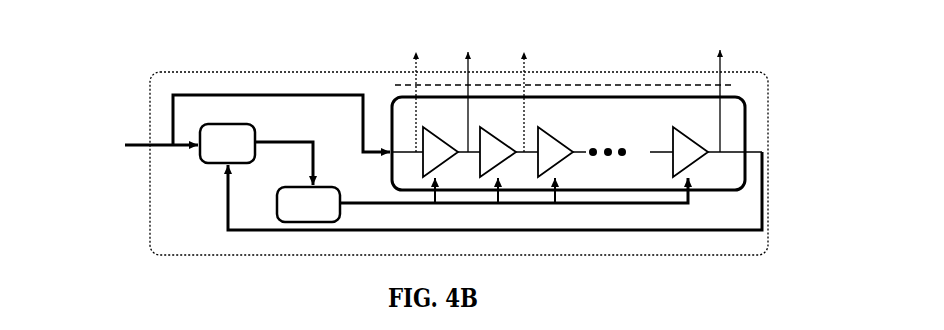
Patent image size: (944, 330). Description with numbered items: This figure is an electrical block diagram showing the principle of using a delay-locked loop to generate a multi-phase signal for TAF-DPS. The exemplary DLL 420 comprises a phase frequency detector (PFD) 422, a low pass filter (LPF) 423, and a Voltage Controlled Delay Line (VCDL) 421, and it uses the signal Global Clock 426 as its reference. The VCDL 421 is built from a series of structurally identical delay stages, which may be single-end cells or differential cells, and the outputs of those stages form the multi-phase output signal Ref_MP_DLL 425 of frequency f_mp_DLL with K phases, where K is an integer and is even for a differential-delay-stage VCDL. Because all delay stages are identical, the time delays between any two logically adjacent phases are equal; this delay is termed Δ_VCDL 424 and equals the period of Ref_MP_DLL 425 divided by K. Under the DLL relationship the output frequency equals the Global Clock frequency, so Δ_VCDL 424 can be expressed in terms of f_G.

The DLL 420 is at (297, 53).
The Voltage Controlled Delay Line (VCDL) 421 is at (705, 198).
The phase frequency detector (PFD) 422 is at (297, 117).
The low pass filter (LPF) 423 is at (273, 198).
The time delay Δ_VCDL 424 is at (650, 35).
The multi-phase signal Ref_MP_DLL 425 is at (780, 38).
The Global Clock 426 is at (88, 113).